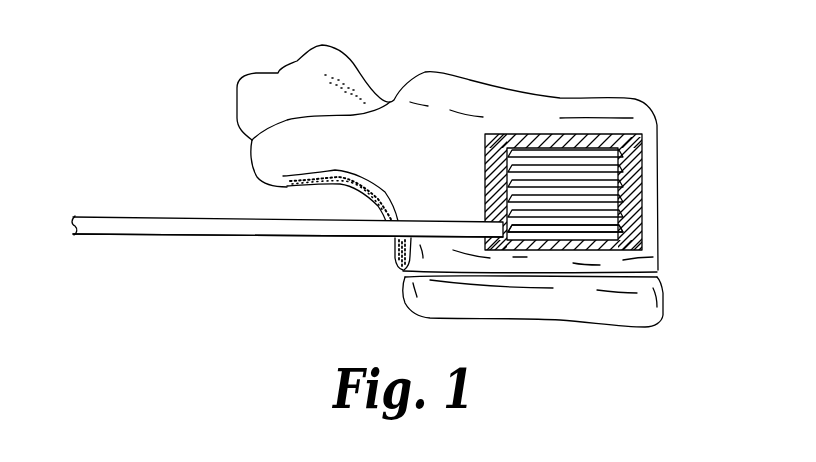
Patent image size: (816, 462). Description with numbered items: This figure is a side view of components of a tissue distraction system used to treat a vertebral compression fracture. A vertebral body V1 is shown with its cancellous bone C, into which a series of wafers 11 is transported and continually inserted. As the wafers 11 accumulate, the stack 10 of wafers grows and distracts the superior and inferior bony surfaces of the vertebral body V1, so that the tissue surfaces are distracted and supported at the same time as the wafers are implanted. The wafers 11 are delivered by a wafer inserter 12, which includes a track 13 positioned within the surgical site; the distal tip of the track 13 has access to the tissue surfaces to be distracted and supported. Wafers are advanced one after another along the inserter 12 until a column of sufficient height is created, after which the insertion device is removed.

The vertebral body V1 is at (464, 87).
The cancellous bone C is at (620, 155).
The stack of wafers 10 is at (620, 185).
The wafers 11 is at (620, 225).
The wafer inserter 12 is at (187, 217).
The track 13 is at (131, 228).